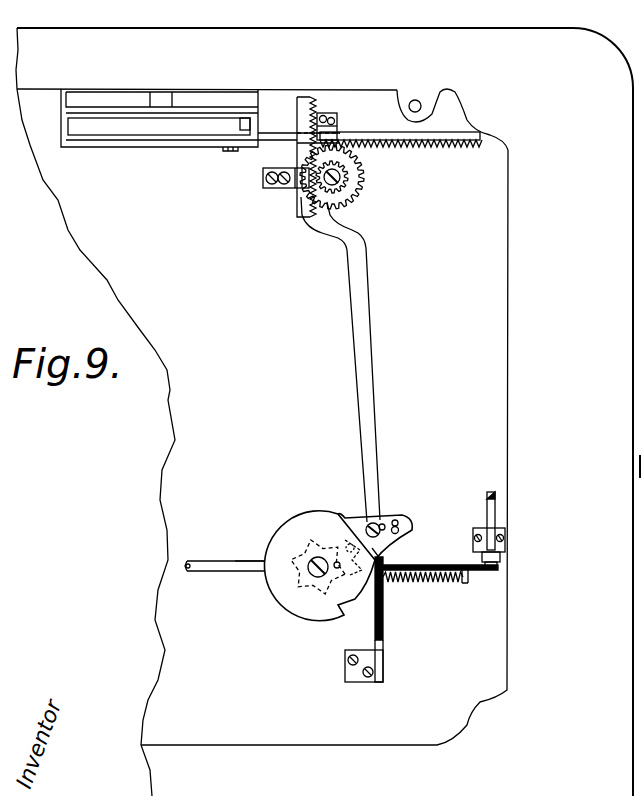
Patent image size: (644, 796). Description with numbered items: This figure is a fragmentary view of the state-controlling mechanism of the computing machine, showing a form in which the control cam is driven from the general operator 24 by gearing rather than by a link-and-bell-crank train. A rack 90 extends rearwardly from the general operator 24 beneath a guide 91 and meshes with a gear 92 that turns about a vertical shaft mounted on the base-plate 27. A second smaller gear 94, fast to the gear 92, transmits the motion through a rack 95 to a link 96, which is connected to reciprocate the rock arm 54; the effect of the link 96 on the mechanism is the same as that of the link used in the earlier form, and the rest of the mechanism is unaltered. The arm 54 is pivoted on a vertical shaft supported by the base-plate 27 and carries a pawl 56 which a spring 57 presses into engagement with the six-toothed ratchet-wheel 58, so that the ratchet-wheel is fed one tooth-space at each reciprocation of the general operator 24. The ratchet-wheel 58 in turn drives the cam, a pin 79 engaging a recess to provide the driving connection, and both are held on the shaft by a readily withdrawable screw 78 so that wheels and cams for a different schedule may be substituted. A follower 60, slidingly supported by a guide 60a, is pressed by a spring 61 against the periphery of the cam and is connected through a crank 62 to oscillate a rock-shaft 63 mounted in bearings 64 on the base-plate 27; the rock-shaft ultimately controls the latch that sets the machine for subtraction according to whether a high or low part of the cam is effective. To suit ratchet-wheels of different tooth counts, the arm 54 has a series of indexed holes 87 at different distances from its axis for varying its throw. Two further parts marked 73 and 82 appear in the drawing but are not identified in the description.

The general operator 24 is at (222, 128).
The base-plate 27 is at (324, 412).
The rock arm 54 is at (388, 520).
The pawl 56 is at (359, 562).
The spring 57 is at (381, 551).
The ratchet-wheel 58 is at (296, 575).
The follower 60 is at (427, 567).
The guide 60a is at (384, 626).
The spring 61 is at (438, 579).
The crank 62 is at (488, 571).
The rock-shaft 63 is at (488, 510).
The bearings 64 is at (505, 548).
The rod end 73 is at (245, 548).
The screw 78 is at (313, 560).
The pin 79 is at (337, 570).
The rod 82 is at (236, 569).
The holes 87 is at (405, 530).
The rack 90 is at (440, 135).
The guide 91 is at (337, 131).
The gear 92 is at (358, 168).
The second smaller gear 94 is at (345, 185).
The rack 95 is at (297, 113).
The link 96 is at (370, 377).